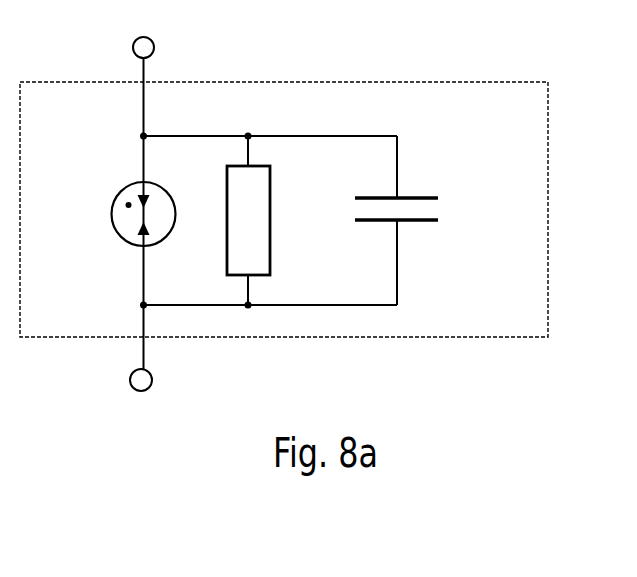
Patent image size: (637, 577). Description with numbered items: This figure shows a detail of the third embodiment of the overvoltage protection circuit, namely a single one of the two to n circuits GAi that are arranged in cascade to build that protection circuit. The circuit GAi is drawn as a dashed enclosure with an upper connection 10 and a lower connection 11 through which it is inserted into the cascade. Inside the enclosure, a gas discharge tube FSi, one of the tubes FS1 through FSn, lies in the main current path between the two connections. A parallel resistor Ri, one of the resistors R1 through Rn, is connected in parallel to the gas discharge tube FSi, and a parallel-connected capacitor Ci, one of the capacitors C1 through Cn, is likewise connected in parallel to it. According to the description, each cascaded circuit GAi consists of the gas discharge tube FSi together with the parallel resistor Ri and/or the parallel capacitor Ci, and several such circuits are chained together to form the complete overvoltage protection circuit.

The first terminal 10 is at (153, 49).
The second terminal 11 is at (144, 381).
The gas discharge tube FSi is at (112, 220).
The parallel resistor Ri is at (257, 210).
The parallel-connected capacitor Ci is at (420, 210).
The circuit GAi is at (284, 209).